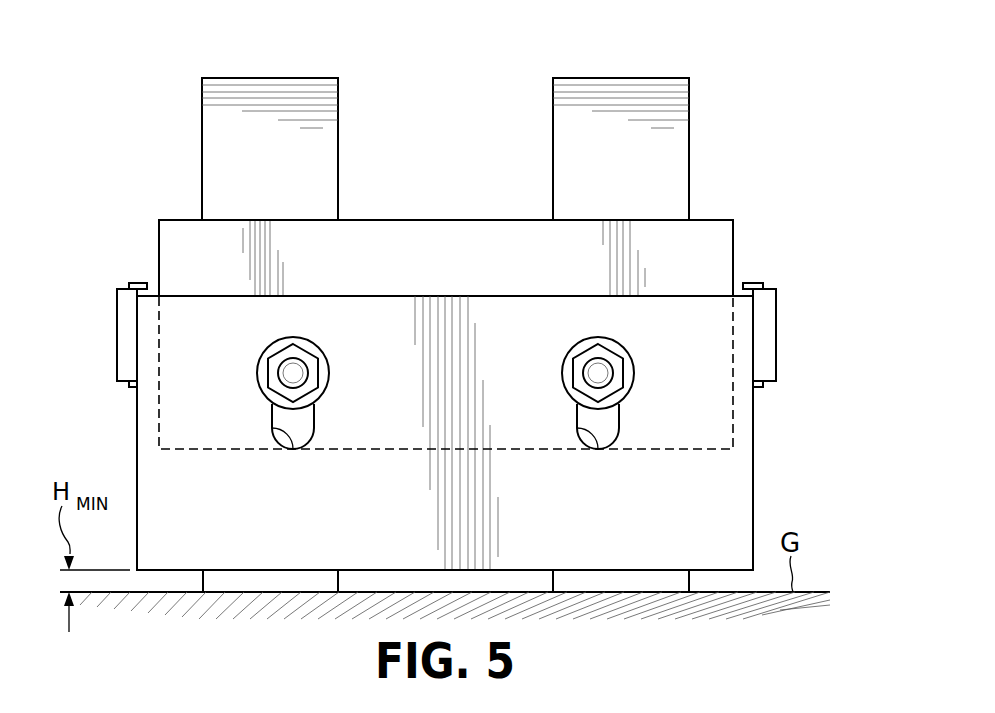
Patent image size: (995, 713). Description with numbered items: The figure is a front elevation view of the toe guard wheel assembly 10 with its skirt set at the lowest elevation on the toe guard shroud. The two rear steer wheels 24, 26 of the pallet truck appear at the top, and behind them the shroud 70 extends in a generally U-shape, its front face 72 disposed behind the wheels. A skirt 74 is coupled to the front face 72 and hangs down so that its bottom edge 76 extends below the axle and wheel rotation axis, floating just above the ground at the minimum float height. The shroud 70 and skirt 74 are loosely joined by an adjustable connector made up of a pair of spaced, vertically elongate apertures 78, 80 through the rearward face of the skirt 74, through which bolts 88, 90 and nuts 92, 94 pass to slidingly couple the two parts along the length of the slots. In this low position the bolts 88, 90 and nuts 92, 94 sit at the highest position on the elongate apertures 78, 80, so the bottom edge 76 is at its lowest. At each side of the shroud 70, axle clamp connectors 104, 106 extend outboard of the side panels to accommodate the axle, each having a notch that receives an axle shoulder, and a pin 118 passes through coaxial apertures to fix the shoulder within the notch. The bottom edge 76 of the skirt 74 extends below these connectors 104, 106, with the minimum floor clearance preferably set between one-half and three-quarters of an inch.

The toe guard wheel assembly 10 is at (153, 95).
The wheel 24 is at (621, 78).
The wheel 26 is at (272, 78).
The shroud 70 is at (457, 220).
The front face 72 is at (432, 274).
The skirt 74 is at (755, 480).
The bottom edge 76 is at (377, 573).
The elongate aperture 78 is at (598, 449).
The elongate aperture 80 is at (293, 449).
The bolt 88 is at (563, 373).
The bolt 90 is at (259, 373).
The nut 92 is at (634, 373).
The nut 94 is at (329, 373).
The connector 104 is at (777, 335).
The connector 106 is at (116, 334).
The pin 118 is at (138, 283).